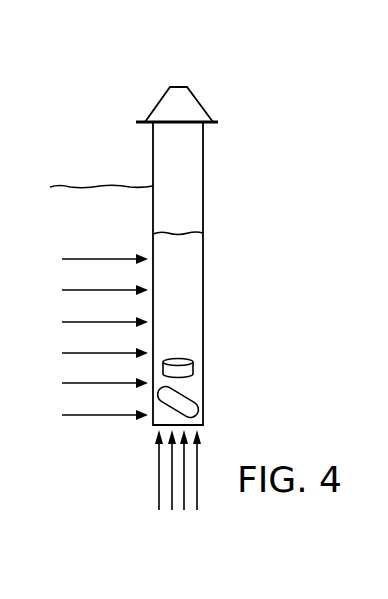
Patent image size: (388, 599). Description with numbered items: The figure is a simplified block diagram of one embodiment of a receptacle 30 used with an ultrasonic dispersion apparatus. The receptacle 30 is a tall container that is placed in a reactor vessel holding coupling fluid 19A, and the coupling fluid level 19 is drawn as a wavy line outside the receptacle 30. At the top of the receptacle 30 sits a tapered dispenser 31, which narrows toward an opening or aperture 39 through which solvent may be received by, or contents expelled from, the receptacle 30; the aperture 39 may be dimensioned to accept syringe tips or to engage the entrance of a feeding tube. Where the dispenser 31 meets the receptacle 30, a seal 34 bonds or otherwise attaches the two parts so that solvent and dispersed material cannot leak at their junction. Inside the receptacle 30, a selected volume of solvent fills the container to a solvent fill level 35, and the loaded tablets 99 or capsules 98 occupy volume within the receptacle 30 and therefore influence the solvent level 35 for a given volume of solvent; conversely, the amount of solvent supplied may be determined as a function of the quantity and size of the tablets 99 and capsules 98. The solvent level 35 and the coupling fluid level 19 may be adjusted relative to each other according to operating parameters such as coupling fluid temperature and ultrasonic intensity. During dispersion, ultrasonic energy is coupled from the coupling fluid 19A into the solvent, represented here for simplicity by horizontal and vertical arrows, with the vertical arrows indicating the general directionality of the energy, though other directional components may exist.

The coupling fluid level 19 is at (72, 185).
The coupling fluid 19A is at (79, 236).
The receptacle 30 is at (153, 163).
The dispenser 31 is at (160, 100).
The seal 34 is at (217, 121).
The solvent fill level 35 is at (173, 234).
The aperture 39 is at (178, 85).
The capsules 98 is at (183, 393).
The tablets 99 is at (185, 359).